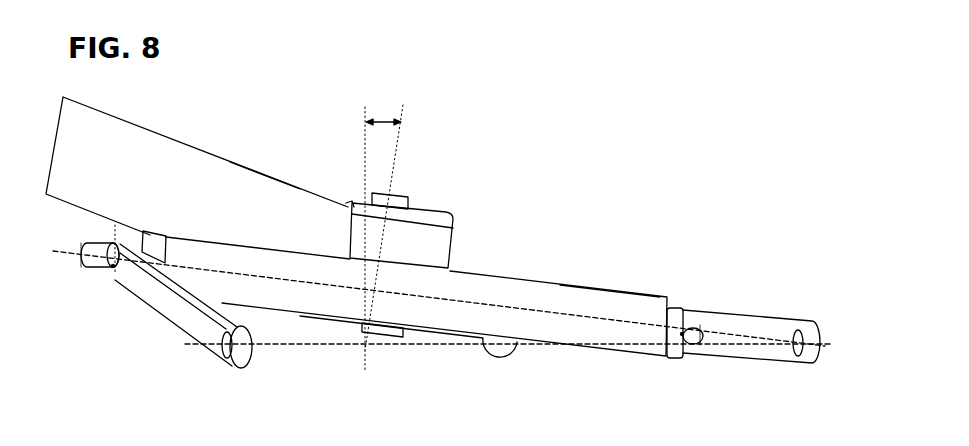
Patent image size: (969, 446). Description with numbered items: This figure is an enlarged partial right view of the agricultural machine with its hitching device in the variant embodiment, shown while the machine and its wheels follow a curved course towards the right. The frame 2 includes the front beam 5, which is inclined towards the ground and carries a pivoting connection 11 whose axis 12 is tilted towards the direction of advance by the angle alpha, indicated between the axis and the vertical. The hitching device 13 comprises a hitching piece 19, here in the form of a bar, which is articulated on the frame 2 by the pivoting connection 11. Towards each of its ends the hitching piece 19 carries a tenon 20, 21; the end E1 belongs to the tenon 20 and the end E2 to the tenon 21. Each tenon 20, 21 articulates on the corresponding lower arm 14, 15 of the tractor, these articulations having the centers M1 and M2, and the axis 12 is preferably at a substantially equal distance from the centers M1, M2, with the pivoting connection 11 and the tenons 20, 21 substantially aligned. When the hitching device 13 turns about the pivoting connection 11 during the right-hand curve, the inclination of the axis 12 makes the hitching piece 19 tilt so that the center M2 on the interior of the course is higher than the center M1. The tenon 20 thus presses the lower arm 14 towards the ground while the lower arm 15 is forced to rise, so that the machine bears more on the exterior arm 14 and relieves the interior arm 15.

The frame 2 is at (233, 164).
The front beam 5 is at (271, 196).
The pivoting connection 11 is at (400, 201).
The axis 12 is at (397, 155).
The hitching device 13 is at (509, 270).
The lower arm 14 is at (780, 337).
The lower arm 15 is at (157, 297).
The hitching piece 19 is at (592, 303).
The tenon 20 is at (683, 308).
The tenon 21 is at (90, 268).
The first end E1 is at (703, 330).
The second end E2 is at (87, 250).
The center of articulation M1 is at (681, 336).
The center of articulation M2 is at (112, 268).